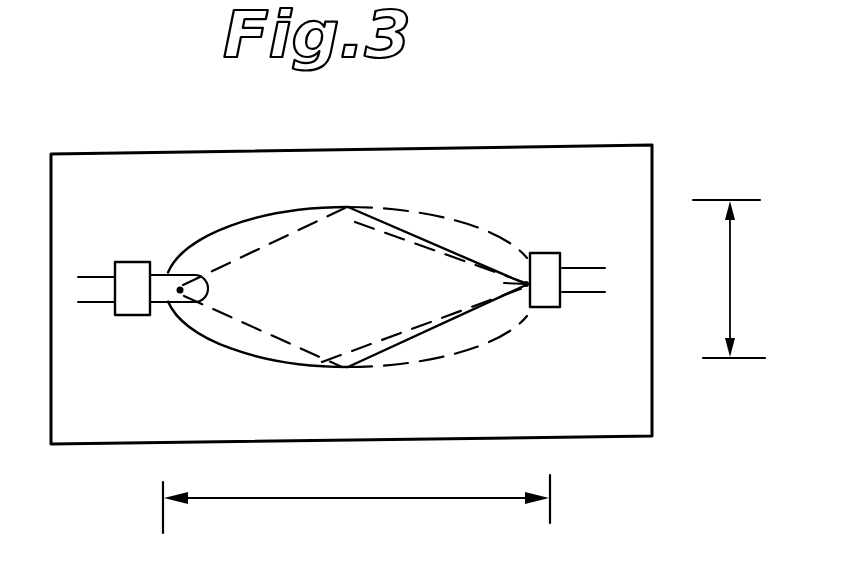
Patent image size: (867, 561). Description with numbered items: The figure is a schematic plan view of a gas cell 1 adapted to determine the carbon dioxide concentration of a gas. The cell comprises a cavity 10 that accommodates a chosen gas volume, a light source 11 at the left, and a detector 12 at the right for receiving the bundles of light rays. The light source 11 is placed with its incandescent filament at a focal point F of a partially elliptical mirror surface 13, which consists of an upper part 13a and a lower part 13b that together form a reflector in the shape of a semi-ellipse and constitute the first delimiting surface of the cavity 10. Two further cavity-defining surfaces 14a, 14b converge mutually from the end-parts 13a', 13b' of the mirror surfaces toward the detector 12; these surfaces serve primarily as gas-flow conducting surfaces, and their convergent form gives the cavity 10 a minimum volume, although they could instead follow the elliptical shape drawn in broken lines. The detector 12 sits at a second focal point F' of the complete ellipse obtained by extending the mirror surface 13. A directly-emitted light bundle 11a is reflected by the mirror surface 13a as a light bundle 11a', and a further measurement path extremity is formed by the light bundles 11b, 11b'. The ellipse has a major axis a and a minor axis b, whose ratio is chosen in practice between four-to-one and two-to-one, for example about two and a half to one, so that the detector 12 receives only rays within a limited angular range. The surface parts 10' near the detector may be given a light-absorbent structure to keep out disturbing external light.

The gas cell 1 is at (638, 117).
The cavity 10 is at (347, 285).
The surface parts 10' is at (520, 331).
The light source 11 is at (175, 305).
The directly-emitted light bundle 11a is at (264, 223).
The reflected light bundle 11a' is at (430, 259).
The directly-emitted light bundle 11b is at (255, 342).
The reflected light bundle 11b' is at (422, 325).
The detector 12 is at (554, 254).
The partially elliptical mirror surface 13 is at (258, 285).
The upper mirror surface part 13a is at (258, 217).
The upper mirror surface end-part 13a' is at (437, 209).
The lower mirror surface part 13b is at (258, 356).
The lower mirror surface end-part 13b' is at (408, 367).
The upper cavity-defining surface 14a is at (420, 237).
The lower cavity-defining surface 14b is at (440, 326).
The focal point F is at (165, 250).
The second focal point F' is at (523, 242).
The major axis a is at (356, 504).
The minor axis b is at (729, 279).